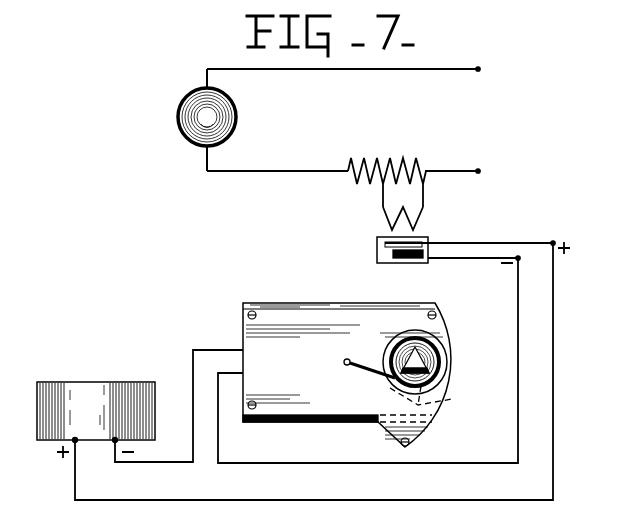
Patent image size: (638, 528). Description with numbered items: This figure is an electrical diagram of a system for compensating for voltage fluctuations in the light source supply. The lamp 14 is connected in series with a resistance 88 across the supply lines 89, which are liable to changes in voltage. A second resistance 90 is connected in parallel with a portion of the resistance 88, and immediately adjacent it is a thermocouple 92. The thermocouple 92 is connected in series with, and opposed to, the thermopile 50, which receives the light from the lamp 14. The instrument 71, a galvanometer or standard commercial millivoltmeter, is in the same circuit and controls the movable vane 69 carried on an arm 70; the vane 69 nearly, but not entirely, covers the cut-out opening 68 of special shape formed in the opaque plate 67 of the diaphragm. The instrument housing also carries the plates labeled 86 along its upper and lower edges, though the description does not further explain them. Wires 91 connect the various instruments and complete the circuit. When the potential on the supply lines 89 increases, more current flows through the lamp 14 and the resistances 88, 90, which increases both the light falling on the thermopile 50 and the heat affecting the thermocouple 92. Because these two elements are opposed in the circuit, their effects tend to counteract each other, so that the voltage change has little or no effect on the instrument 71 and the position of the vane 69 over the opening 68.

The lamp 14 is at (198, 117).
The thermopile 50 is at (112, 375).
The opaque plate 67 is at (440, 361).
The cut-out opening 68 is at (440, 376).
The movable vane 69 is at (447, 401).
The arm 70 is at (372, 375).
The millivoltmeter 71 is at (347, 375).
The plates 86 is at (357, 306).
The resistance 88 is at (409, 158).
The supply lines 89 is at (481, 82).
The second resistance 90 is at (387, 222).
The wires 91 is at (444, 252).
The thermocouple 92 is at (378, 251).